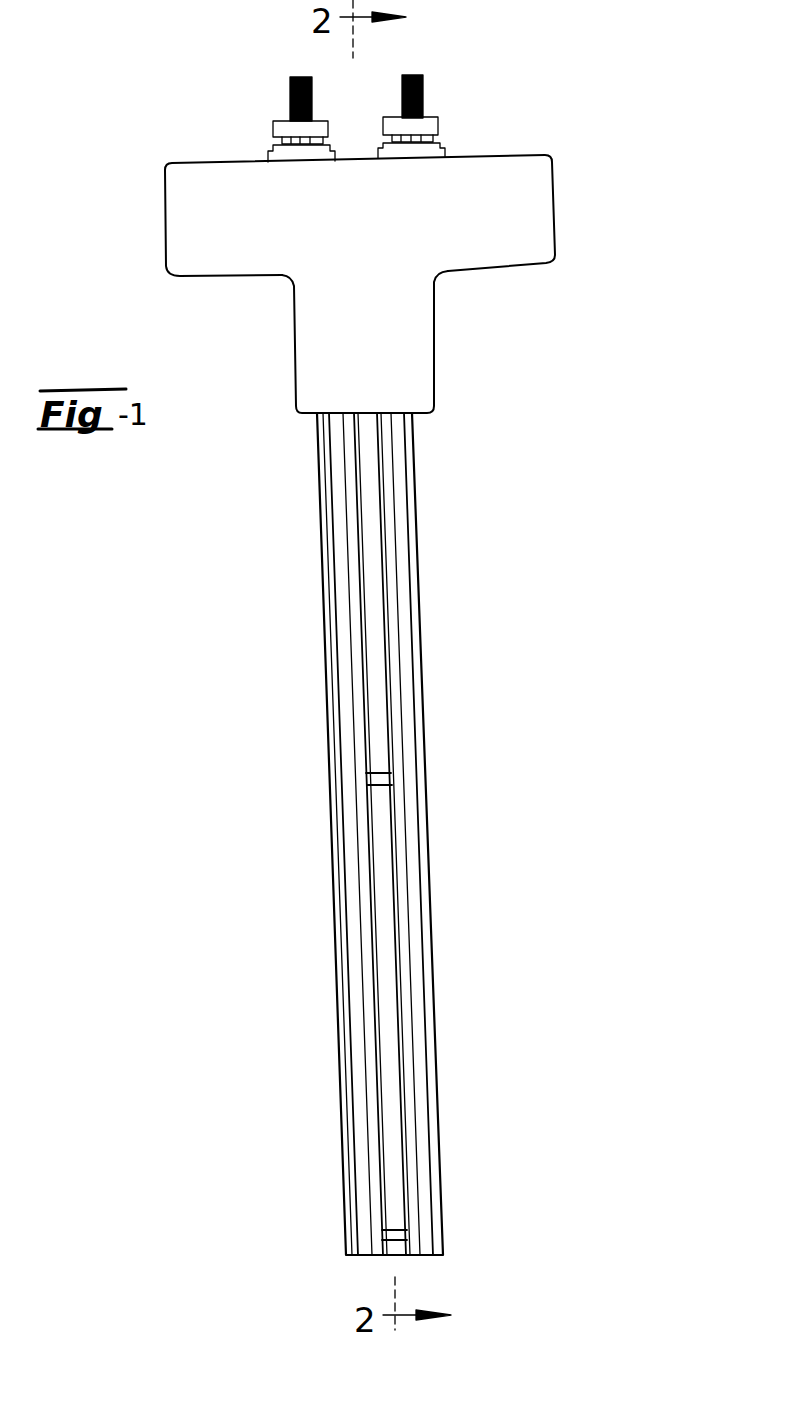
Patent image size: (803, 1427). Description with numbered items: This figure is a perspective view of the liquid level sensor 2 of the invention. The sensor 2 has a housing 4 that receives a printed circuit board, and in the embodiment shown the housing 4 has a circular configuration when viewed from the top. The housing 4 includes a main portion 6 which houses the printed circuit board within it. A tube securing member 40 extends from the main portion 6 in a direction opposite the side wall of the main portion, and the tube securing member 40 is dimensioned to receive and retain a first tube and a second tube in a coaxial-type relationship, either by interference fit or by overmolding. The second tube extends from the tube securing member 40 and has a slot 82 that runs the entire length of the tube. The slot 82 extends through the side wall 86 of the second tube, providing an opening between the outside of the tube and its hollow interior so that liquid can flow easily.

The liquid level sensor 2 is at (594, 318).
The housing 4 is at (594, 130).
The main portion 6 is at (167, 213).
The tube securing member 40 is at (433, 343).
The slot 82 is at (380, 840).
The side wall 86 is at (434, 955).